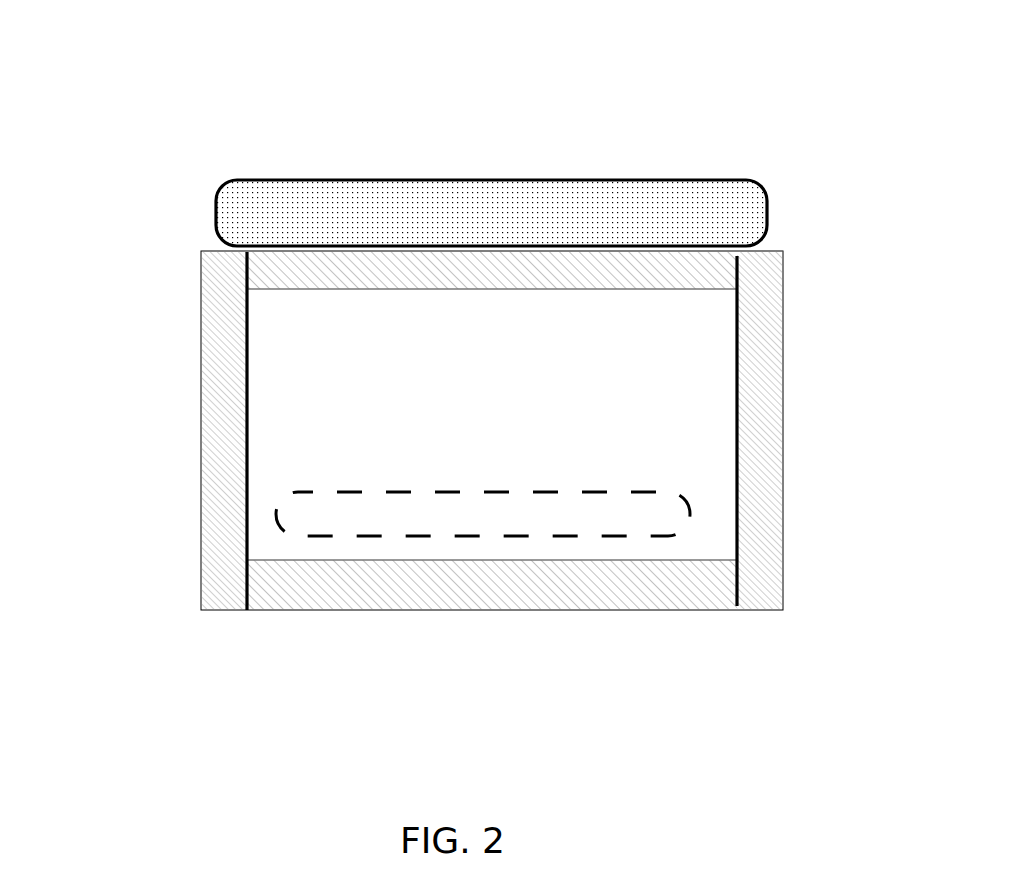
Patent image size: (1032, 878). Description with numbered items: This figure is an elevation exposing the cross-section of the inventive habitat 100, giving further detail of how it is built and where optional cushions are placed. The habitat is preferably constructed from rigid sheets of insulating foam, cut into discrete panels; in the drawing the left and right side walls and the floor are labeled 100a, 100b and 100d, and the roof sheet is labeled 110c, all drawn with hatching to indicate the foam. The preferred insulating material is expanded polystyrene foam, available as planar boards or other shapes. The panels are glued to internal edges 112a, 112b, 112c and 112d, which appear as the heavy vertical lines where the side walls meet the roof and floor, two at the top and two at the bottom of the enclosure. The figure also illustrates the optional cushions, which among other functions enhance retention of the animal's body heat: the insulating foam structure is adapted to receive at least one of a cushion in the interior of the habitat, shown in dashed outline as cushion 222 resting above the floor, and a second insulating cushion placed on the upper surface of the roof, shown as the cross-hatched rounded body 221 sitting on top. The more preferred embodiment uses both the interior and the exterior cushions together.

The habitat 100 is at (249, 132).
The first side wall 100a is at (220, 415).
The second side wall 100b is at (767, 435).
The bottom wall 100d is at (521, 598).
The roof insulating foam sheet 110c is at (600, 262).
The internal edge 112a is at (240, 278).
The internal edge 112b is at (763, 284).
The internal edge 112c is at (247, 583).
The internal edge 112d is at (762, 583).
The first heating element 221 is at (362, 214).
The second heating element (hidden) 222 is at (482, 492).